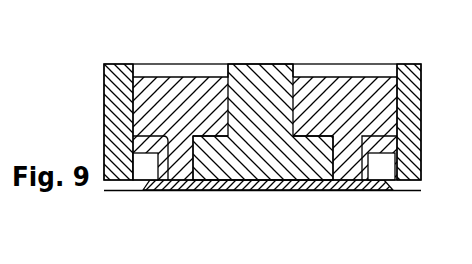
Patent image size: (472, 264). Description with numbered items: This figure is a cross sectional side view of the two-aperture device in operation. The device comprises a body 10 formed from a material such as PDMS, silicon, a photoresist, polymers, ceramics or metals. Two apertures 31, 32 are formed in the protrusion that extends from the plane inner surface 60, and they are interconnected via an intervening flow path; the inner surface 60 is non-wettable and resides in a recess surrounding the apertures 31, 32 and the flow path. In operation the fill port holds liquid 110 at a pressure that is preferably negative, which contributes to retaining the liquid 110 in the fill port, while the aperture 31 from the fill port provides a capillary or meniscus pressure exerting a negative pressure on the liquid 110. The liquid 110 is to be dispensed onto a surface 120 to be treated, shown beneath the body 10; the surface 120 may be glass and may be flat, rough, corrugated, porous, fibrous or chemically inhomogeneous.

The body 10 is at (120, 88).
The liquid 110 is at (205, 90).
The aperture 31 is at (188, 182).
The aperture 32 is at (352, 182).
The surface 120 is at (253, 191).
The inner surface 60 is at (133, 182).